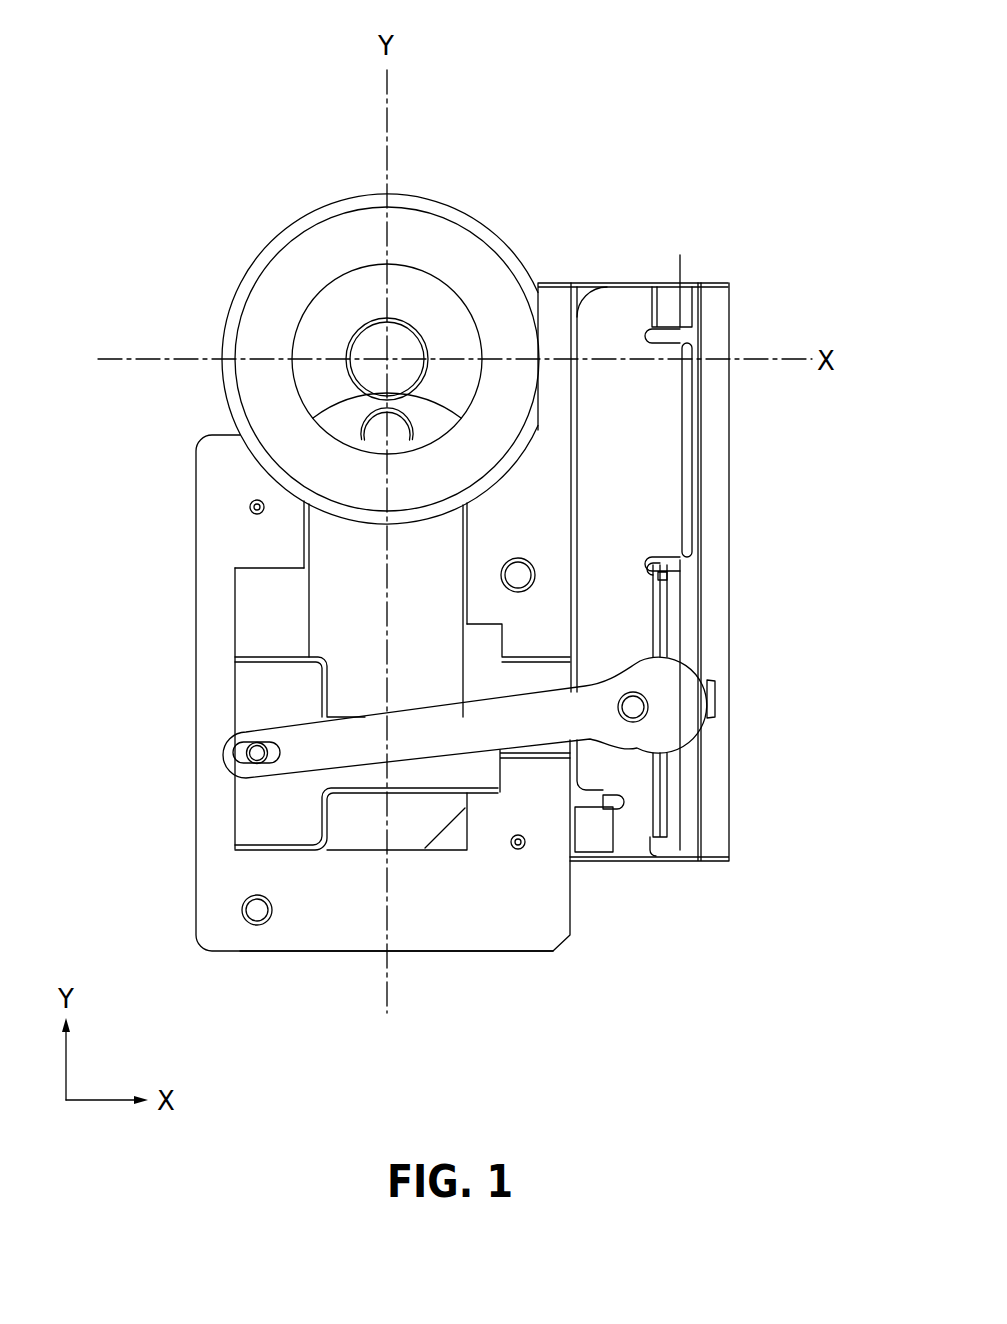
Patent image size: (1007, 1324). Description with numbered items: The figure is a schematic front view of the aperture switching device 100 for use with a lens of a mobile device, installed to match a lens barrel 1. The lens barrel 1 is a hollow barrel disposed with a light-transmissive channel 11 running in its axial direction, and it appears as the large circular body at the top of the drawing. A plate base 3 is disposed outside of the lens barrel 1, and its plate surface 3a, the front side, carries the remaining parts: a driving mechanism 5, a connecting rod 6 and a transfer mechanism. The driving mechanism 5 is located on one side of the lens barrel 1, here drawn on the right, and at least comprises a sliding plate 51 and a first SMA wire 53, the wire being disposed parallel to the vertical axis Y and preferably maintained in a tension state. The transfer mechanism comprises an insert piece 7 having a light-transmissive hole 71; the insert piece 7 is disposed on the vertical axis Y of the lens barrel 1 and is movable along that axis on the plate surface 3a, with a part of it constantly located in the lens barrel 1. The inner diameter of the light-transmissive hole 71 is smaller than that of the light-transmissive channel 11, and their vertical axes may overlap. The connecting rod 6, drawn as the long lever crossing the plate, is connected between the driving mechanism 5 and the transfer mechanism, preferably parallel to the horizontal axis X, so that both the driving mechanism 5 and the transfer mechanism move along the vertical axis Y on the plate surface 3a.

The aperture switching device 100 is at (772, 38).
The lens barrel 1 is at (250, 238).
The light-transmissive channel 11 is at (365, 346).
The plate base 3 is at (185, 512).
The plate surface 3a is at (302, 927).
The driving mechanism 5 is at (705, 423).
The sliding plate 51 is at (688, 483).
The first SMA wire 53 is at (680, 607).
The connecting rod 6 is at (470, 756).
The insert piece 7 is at (298, 607).
The light-transmissive hole 71 is at (373, 443).